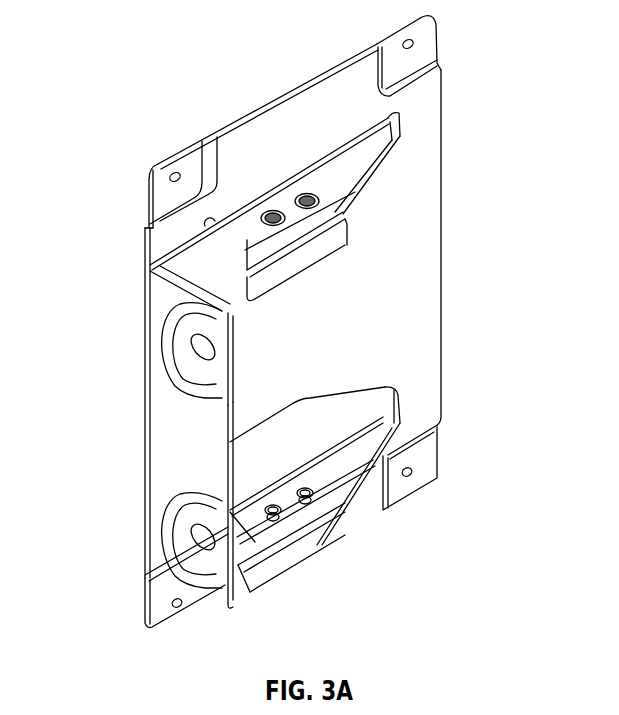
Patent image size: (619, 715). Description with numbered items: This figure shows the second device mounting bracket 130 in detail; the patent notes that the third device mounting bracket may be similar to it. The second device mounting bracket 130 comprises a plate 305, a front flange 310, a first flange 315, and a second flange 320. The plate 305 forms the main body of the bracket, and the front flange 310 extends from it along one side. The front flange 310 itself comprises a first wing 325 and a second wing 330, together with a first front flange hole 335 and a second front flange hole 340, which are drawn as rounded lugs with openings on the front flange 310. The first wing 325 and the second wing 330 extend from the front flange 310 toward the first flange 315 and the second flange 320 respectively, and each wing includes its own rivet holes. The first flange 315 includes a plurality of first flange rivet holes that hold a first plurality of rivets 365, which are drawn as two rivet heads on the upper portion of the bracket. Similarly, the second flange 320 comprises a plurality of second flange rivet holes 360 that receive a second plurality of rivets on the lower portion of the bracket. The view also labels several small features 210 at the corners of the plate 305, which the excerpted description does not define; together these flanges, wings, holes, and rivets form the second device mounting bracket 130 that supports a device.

The second device mounting bracket 130 is at (113, 51).
The mounting tab with hole 210 is at (418, 40).
The plate 305 is at (441, 240).
The front flange 310 is at (160, 418).
The first flange 315 is at (362, 190).
The second flange 320 is at (350, 495).
The first wing 325 is at (190, 256).
The second wing 330 is at (248, 585).
The first front flange hole 335 is at (203, 348).
The second front flange hole 340 is at (200, 540).
The second flange rivet holes 360 is at (305, 488).
The first plurality of rivets 365 is at (307, 193).